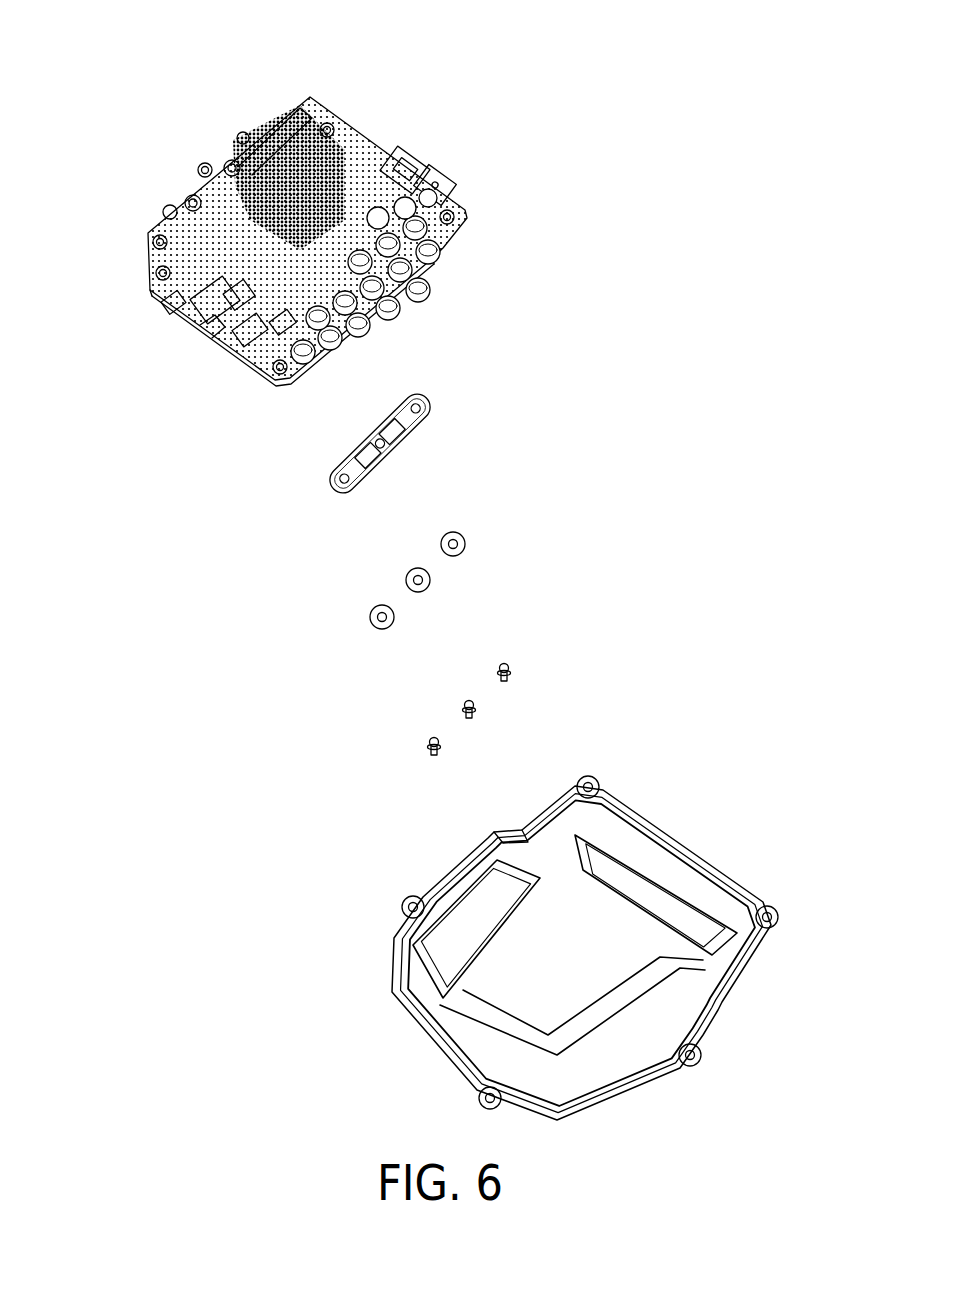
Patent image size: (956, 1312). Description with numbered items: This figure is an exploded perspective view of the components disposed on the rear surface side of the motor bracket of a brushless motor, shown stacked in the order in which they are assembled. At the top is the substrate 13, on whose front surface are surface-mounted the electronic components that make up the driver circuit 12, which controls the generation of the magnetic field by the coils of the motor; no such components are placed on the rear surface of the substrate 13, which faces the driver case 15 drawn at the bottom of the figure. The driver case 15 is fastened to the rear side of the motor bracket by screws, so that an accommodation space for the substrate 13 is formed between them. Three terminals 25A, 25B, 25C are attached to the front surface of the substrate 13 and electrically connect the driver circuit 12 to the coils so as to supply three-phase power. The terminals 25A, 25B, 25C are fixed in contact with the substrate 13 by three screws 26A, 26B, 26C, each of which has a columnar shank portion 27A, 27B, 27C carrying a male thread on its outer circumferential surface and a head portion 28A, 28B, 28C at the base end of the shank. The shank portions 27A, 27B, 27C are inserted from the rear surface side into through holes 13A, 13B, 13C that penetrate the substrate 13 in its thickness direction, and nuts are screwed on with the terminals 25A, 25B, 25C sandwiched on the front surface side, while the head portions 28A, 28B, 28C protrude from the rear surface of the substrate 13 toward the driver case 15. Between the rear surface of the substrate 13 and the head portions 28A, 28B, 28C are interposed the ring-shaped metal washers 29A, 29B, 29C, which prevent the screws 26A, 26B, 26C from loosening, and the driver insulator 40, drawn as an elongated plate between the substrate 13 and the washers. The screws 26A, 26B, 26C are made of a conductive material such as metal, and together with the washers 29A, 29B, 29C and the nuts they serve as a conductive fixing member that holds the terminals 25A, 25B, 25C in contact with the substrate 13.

The driver circuit 12 is at (435, 288).
The substrate 13 is at (467, 215).
The through hole 13A is at (147, 237).
The through hole 13B is at (210, 327).
The through hole 13C is at (244, 163).
The driver case 15 is at (391, 1002).
The terminal 25A is at (168, 210).
The terminal 25B is at (205, 167).
The terminal 25C is at (242, 133).
The screw 26A is at (356, 757).
The screw 26B is at (404, 707).
The screw 26C is at (567, 671).
The shank portion 27A is at (428, 741).
The shank portion 27B is at (464, 705).
The shank portion 27C is at (508, 670).
The head portion 28A is at (428, 750).
The head portion 28B is at (464, 713).
The head portion 28C is at (508, 677).
The washer 29A is at (383, 605).
The washer 29B is at (418, 568).
The washer 29C is at (453, 532).
The driver insulator 40 is at (300, 460).